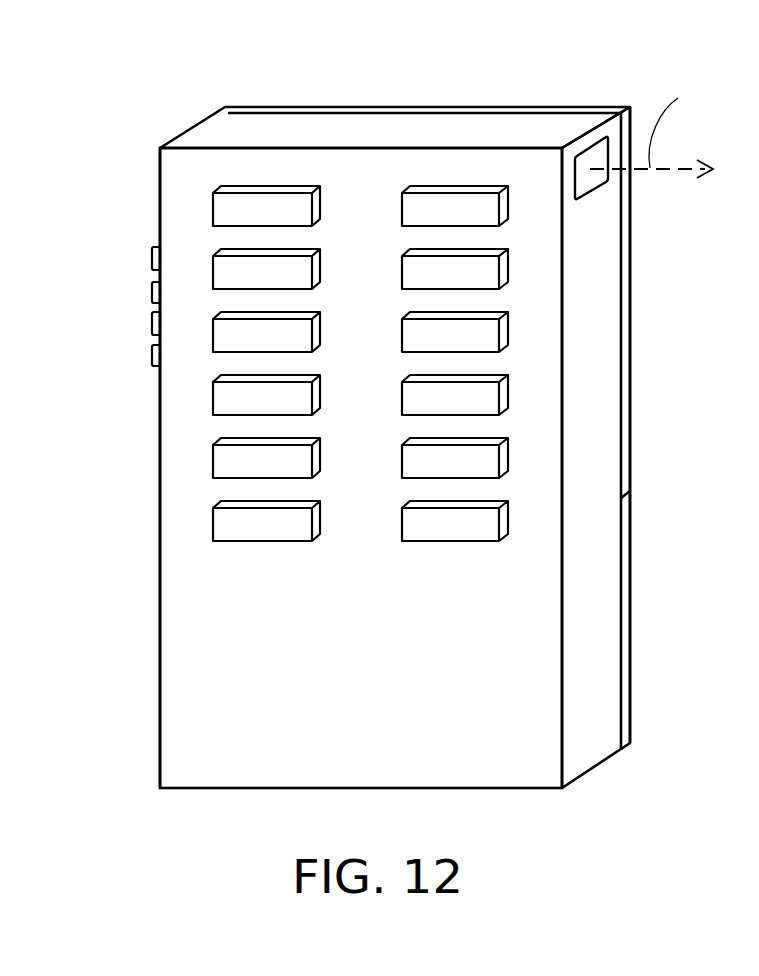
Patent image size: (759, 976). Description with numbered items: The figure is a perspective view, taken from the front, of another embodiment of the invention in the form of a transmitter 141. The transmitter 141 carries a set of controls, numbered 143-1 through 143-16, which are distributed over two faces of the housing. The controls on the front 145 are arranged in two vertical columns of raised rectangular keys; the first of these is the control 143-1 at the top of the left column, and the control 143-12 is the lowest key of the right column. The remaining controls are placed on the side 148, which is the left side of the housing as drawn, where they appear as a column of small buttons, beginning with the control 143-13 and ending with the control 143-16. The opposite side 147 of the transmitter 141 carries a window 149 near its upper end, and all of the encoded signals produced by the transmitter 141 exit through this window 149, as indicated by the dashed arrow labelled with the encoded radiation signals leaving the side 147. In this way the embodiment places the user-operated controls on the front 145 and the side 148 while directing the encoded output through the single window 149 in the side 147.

The transmitter 141 is at (400, 459).
The control 143-1 is at (243, 207).
The control 143-12 is at (483, 516).
The control 143-13 is at (153, 255).
The control 143-16 is at (152, 354).
The front 145 is at (518, 683).
The side 147 is at (588, 316).
The side 148 is at (160, 672).
The window 149 is at (597, 185).